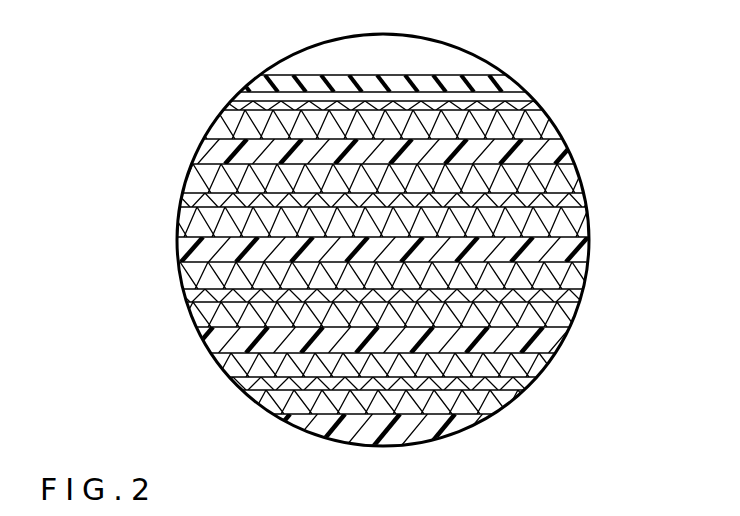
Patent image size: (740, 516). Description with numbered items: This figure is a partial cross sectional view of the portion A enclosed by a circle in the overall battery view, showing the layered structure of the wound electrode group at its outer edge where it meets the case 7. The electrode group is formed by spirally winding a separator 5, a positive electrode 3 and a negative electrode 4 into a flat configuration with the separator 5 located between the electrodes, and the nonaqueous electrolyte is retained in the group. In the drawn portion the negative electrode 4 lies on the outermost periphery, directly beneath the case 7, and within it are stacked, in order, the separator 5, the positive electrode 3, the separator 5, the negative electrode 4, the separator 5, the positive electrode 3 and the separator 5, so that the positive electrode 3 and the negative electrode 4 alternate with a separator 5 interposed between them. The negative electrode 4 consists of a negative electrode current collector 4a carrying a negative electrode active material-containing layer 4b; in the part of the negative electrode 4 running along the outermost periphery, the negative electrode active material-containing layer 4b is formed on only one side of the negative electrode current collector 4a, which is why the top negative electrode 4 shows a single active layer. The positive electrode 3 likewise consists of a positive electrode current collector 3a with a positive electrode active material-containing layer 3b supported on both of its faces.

The portion enclosed by a circle A is at (301, 55).
The positive electrode 3 is at (422, 306).
The positive electrode current collector 3a is at (578, 203).
The positive electrode active material-containing layer 3b is at (568, 183).
The negative electrode 4 is at (422, 210).
The negative electrode current collector 4a is at (545, 107).
The negative electrode active material-containing layer 4b is at (547, 127).
The separator 5 is at (205, 148).
The case 7 is at (505, 85).